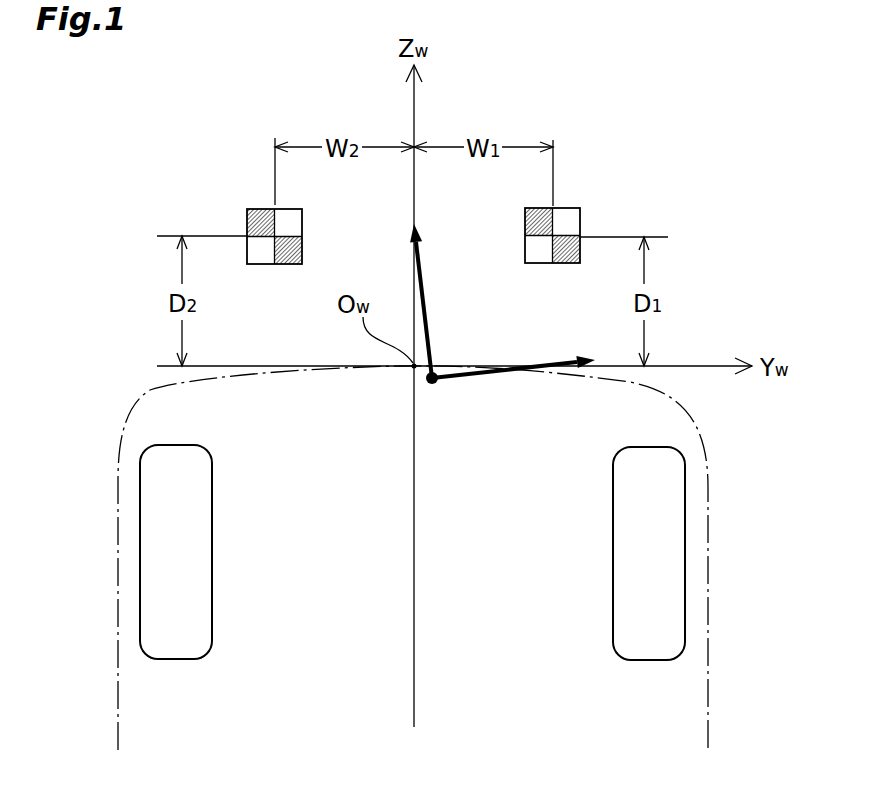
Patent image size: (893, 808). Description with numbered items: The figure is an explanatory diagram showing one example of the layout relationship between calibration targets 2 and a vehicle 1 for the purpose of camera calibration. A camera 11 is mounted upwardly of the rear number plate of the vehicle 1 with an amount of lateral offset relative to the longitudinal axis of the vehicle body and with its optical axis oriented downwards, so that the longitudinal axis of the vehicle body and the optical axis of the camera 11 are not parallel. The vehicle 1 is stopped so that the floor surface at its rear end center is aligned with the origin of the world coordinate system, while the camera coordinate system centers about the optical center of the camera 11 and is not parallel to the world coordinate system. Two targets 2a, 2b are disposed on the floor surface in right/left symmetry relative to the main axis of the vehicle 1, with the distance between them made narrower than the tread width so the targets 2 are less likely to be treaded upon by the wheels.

The vehicle 1 is at (708, 618).
The calibration targets 2 is at (406, 193).
The target 2a is at (250, 212).
The target 2b is at (573, 215).
The camera 11 is at (437, 366).